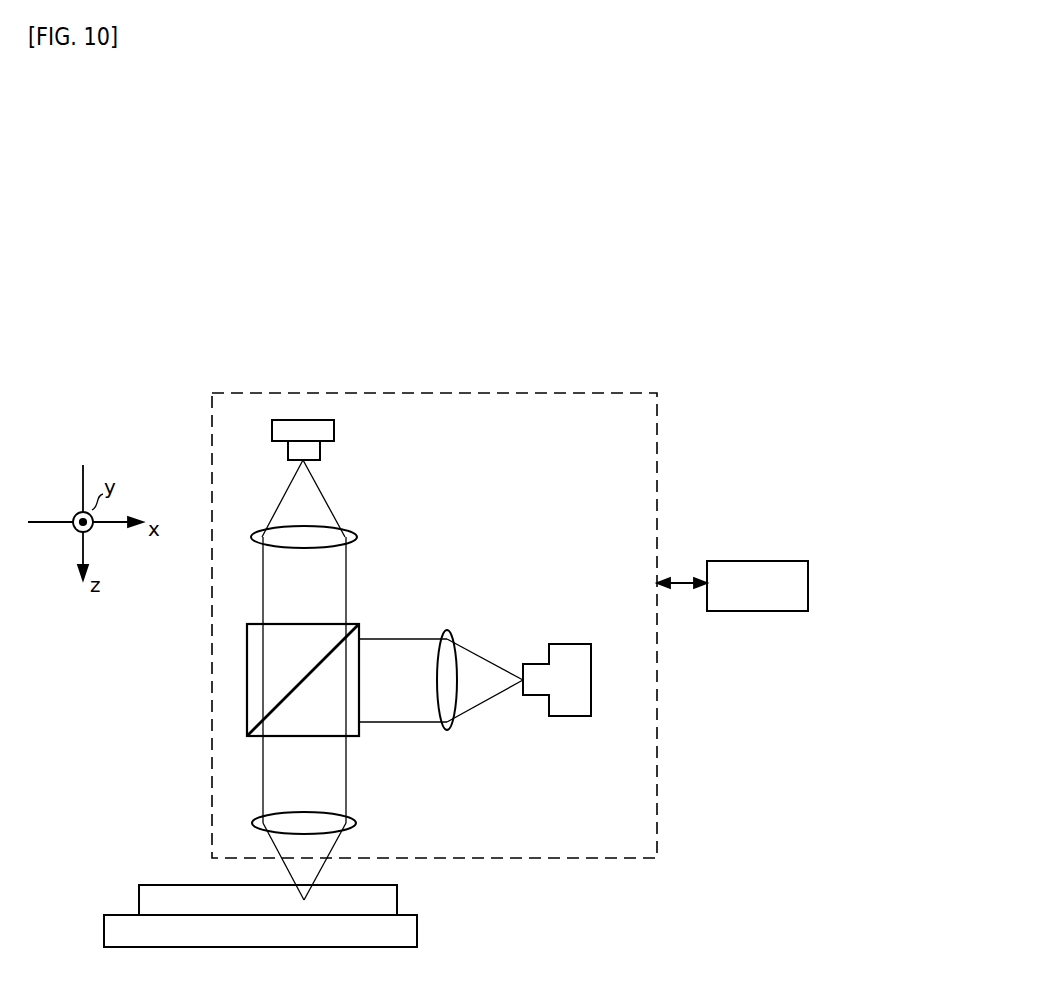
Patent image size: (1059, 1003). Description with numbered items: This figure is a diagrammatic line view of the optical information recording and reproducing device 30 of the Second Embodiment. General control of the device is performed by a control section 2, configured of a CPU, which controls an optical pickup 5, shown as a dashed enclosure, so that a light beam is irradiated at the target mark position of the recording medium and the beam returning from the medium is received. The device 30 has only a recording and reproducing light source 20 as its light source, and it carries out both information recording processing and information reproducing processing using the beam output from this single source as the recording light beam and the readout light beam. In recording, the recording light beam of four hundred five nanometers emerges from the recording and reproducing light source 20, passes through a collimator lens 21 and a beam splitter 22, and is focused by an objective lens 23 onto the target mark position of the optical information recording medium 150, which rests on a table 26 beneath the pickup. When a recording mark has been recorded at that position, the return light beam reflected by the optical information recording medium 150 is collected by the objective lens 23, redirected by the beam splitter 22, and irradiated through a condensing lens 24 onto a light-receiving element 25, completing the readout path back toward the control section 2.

The optical information recording and reproducing device 30 is at (61, 383).
The optical pickup 5 is at (609, 393).
The recording and reproducing light source 20 is at (336, 430).
The collimator lens 21 is at (358, 537).
The beam splitter 22 is at (355, 623).
The objective lens 23 is at (357, 823).
The condensing lens 24 is at (445, 730).
The light-receiving element 25 is at (550, 718).
The table 26 is at (419, 930).
The optical information recording medium 150 is at (399, 897).
The control section 2 is at (760, 560).